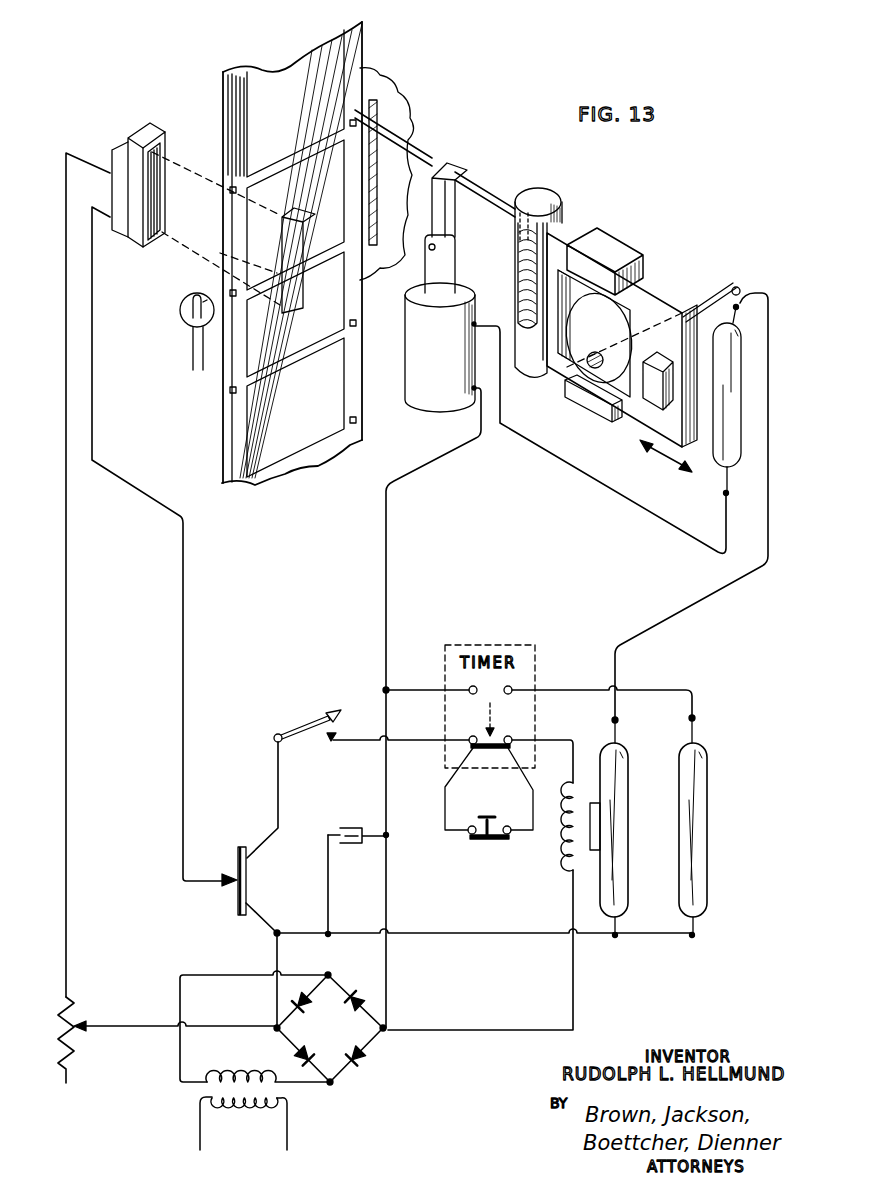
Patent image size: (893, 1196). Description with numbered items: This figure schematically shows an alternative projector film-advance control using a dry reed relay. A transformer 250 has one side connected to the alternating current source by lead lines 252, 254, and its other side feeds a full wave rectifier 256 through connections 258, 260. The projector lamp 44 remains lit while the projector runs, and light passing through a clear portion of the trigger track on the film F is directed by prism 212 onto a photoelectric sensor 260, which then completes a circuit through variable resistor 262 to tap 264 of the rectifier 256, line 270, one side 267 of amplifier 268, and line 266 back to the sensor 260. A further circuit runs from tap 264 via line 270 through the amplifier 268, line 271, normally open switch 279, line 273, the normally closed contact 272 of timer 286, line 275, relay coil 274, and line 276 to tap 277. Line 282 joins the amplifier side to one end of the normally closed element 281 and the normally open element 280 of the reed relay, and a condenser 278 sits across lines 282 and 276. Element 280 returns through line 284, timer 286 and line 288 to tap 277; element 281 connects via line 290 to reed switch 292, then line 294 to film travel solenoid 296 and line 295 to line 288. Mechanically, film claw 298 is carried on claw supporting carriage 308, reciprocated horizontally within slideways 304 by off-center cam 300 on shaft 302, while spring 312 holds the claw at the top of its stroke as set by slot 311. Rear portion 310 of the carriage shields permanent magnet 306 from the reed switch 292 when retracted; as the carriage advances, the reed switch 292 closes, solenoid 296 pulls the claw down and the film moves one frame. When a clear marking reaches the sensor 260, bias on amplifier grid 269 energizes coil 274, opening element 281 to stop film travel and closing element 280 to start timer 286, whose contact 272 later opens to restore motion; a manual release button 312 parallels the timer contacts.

The film F is at (362, 46).
The projector lamp 44 is at (180, 308).
The prism 212 is at (306, 280).
The transformer 250 is at (207, 1090).
The lead line 252 is at (198, 1133).
The lead line 254 is at (289, 1135).
The full wave rectifier 256 is at (374, 1043).
The rectifier connection 258 is at (328, 973).
The photoelectric sensor 260 is at (144, 247).
The variable resistor 262 is at (70, 1050).
The tap 264 is at (277, 1042).
The line 266 is at (180, 753).
The amplifier side 267 is at (228, 873).
The amplifier 268 is at (236, 892).
The amplifier grid 269 is at (247, 888).
The line 270 is at (277, 996).
The line 271 is at (280, 776).
The normally closed timer contact 272 is at (496, 752).
The line 273 is at (357, 743).
The relay coil 274 is at (567, 828).
The line 275 is at (543, 743).
The line 276 is at (388, 863).
The tap connection 277 is at (386, 1028).
The condenser 278 is at (356, 827).
The normally open switch 279 is at (307, 721).
The normally open element 280 is at (704, 802).
The normally closed element 281 is at (623, 863).
The line 282 is at (322, 934).
The line 284 is at (659, 690).
The timer 286 is at (536, 707).
The line 288 is at (437, 690).
The line 290 is at (697, 606).
The reed switch 292 is at (743, 355).
The line 294 is at (724, 514).
The line 295 is at (427, 470).
The film travel solenoid 296 is at (452, 361).
The film claw 298 is at (427, 157).
The off-center cam 300 is at (577, 363).
The shaft 302 is at (738, 285).
The slideways 304 is at (593, 410).
The permanent magnet 306 is at (653, 403).
The claw supporting carriage 308 is at (640, 298).
The rear portion of carriage 310 is at (663, 293).
The slot 311 is at (520, 320).
The spring 312 is at (517, 258).